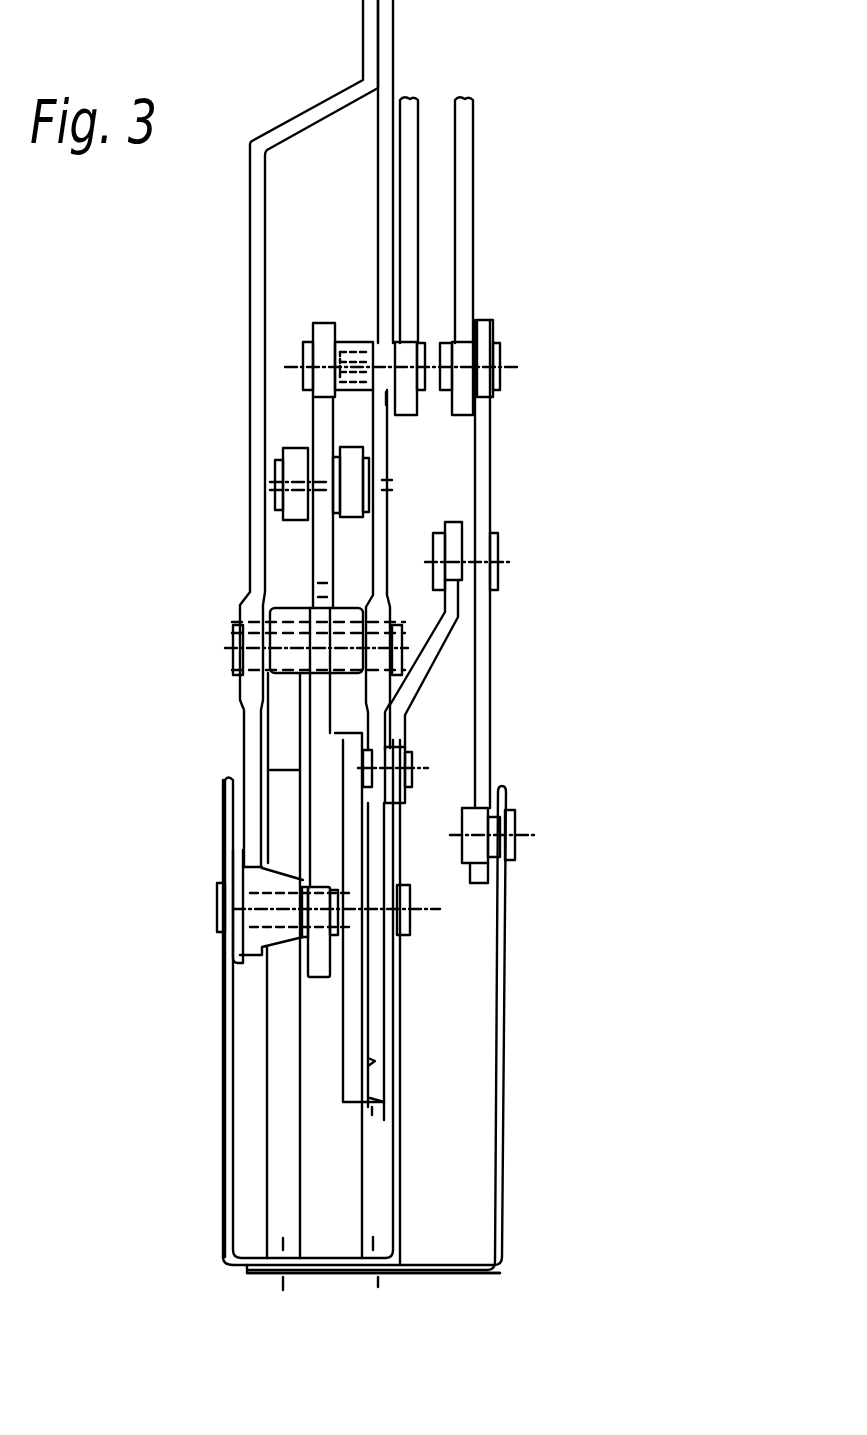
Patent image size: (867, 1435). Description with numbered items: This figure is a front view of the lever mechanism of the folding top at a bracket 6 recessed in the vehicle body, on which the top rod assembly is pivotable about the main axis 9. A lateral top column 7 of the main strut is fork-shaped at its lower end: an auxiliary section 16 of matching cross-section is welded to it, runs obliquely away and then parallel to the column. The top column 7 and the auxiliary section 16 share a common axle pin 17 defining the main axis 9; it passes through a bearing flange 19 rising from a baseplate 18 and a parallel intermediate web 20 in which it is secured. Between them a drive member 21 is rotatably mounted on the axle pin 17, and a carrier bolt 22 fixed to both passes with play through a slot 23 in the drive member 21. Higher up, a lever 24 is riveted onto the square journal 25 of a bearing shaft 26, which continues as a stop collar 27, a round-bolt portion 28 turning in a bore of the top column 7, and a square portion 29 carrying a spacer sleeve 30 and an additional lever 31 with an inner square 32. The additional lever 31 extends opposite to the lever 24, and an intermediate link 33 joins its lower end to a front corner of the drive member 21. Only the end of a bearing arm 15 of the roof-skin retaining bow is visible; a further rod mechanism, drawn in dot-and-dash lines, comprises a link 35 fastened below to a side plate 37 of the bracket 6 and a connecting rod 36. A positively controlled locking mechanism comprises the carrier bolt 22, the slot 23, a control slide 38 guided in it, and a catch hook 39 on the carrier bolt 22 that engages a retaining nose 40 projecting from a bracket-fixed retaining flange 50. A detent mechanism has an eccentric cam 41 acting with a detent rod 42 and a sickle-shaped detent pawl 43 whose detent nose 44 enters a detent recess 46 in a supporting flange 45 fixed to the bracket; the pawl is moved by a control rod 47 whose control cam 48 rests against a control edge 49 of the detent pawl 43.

The bracket 6 is at (215, 1185).
The top column 7 is at (385, 30).
The main axis 9 is at (233, 908).
The bearing arm 15 is at (465, 215).
The auxiliary section 16 is at (252, 232).
The axle pin 17 is at (222, 930).
The baseplate 18 is at (440, 1275).
The bearing flange 19 is at (232, 826).
The intermediate web 20 is at (404, 1012).
The drive member 21 is at (320, 566).
The carrier bolt 22 is at (240, 670).
The slot 23 is at (305, 600).
The lever 24 is at (407, 152).
The square journal 25 is at (424, 346).
The bearing shaft 26 is at (300, 360).
The stop collar 27 is at (397, 345).
The round-bolt portion 28 is at (385, 400).
The square portion 29 is at (352, 340).
The spacer sleeve 30 is at (352, 394).
The additional lever 31 is at (325, 432).
The inner square 32 is at (318, 328).
The intermediate link 33 is at (350, 512).
The link 35 is at (490, 690).
The connecting rod 36 is at (430, 683).
The side plate 37 is at (506, 1020).
The control slide 38 is at (345, 622).
The catch hook 39 is at (285, 727).
The retaining nose 40 is at (285, 771).
The eccentric cam 41 is at (428, 768).
The detent rod 42 is at (355, 835).
The detent pawl 43 is at (368, 994).
The detent nose 44 is at (393, 1103).
The supporting flange 45 is at (378, 1268).
The detent recess 46 is at (372, 1115).
The control rod 47 is at (378, 1035).
The control cam 48 is at (372, 1060).
The control edge 49 is at (388, 1081).
The retaining flange 50 is at (283, 1112).